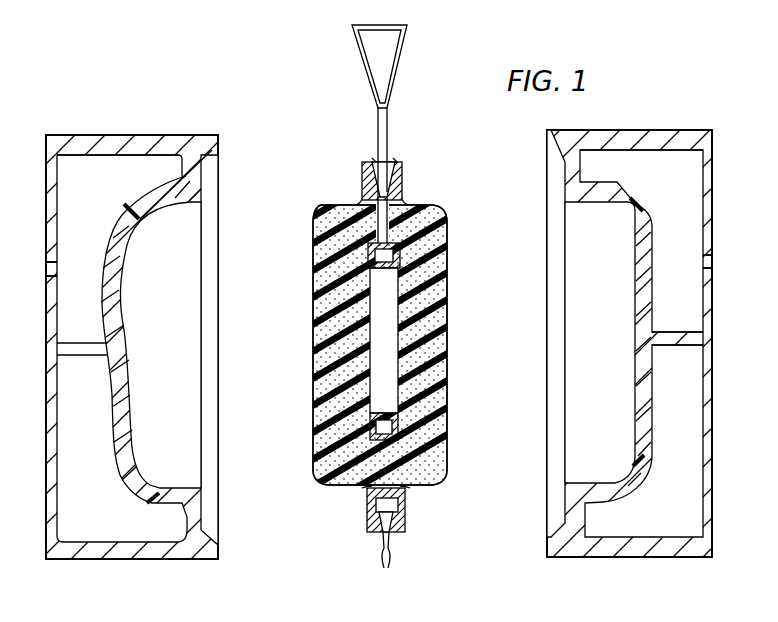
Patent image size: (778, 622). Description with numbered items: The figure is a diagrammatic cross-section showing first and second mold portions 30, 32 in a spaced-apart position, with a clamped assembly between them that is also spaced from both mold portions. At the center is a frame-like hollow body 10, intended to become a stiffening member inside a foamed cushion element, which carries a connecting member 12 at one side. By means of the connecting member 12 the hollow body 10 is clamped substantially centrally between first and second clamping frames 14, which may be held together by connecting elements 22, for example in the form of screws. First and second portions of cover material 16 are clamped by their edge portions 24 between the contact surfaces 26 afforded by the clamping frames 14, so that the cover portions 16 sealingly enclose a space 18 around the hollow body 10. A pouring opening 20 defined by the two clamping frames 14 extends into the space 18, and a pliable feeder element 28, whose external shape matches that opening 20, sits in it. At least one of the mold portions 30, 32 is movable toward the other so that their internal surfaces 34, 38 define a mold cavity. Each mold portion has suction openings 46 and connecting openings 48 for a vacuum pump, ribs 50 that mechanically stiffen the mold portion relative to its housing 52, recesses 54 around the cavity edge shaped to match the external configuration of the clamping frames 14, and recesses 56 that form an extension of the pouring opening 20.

The hollow body 10 is at (385, 309).
The connecting member 12 is at (382, 133).
The clamping frames 14 is at (394, 349).
The cover material portions 16 is at (314, 309).
The space 18 is at (367, 393).
The pouring opening 20 is at (395, 152).
The lower end plug 22 is at (367, 508).
The edge portions 24 is at (371, 160).
The contact surfaces 26 is at (367, 201).
The feeder element 28 is at (386, 80).
The first mold portion 30 is at (137, 571).
The second mold portion 32 is at (652, 566).
The internal surface 34 is at (129, 301).
The internal surface 38 is at (627, 296).
The suction openings 46 is at (127, 208).
The connecting openings 48 is at (705, 263).
The ribs 50 is at (90, 343).
The housing 52 is at (57, 446).
The recesses 54 is at (203, 228).
The recesses 56 is at (212, 146).